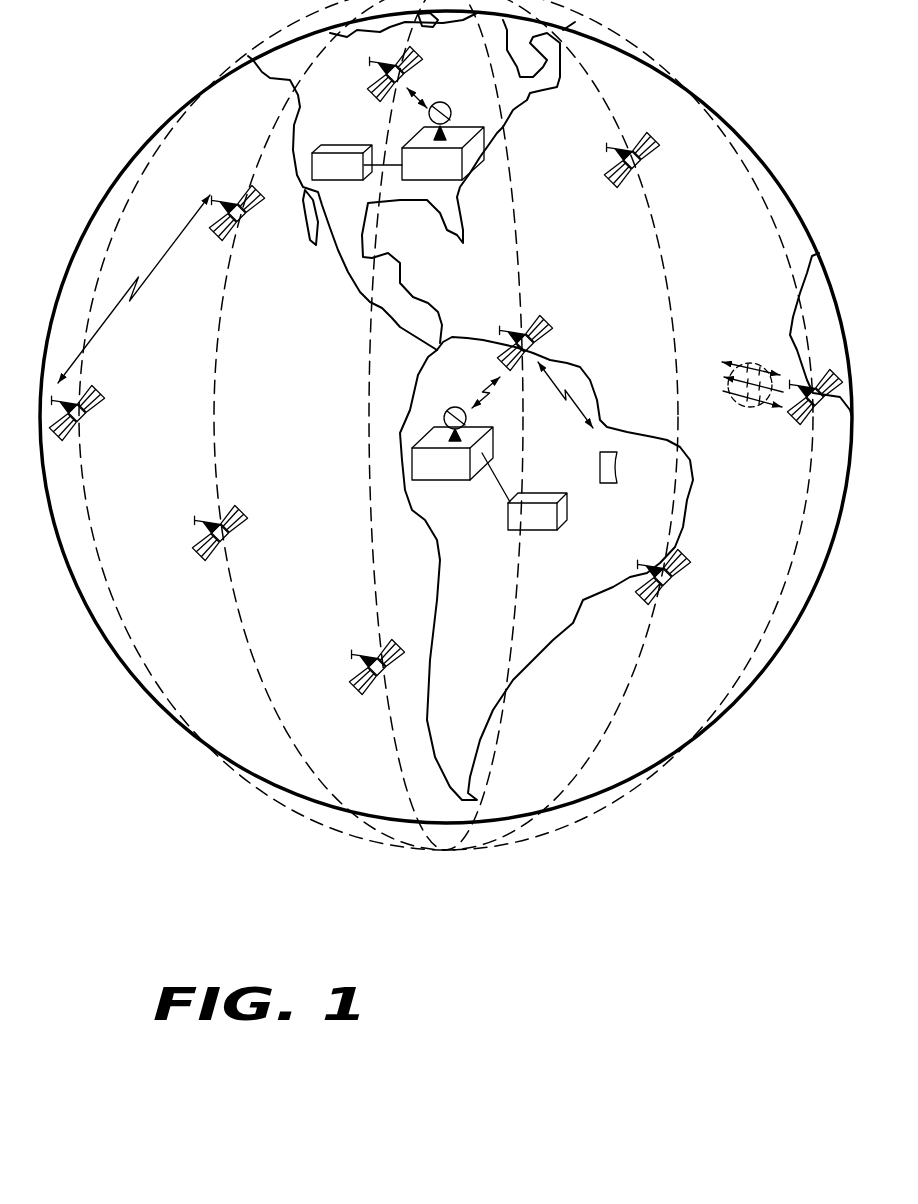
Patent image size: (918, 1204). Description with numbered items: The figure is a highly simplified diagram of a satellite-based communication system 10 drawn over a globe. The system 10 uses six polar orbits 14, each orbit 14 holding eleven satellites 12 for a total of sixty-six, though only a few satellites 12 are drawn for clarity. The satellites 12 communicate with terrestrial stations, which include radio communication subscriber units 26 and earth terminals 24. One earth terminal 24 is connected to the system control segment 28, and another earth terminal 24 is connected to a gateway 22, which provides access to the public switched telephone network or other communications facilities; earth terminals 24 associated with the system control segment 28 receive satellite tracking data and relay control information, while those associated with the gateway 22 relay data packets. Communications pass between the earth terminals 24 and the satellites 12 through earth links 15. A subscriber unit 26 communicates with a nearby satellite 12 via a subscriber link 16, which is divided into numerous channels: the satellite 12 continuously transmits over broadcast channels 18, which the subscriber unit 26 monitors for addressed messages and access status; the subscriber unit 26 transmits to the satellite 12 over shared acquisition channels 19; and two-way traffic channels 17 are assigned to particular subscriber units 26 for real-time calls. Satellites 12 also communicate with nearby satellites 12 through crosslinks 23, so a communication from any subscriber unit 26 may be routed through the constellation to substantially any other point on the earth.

The communication system 10 is at (448, 922).
The satellite 12 is at (375, 103).
The polar orbit 14 is at (270, 133).
The earth link 15 is at (478, 388).
The subscriber link 16 is at (762, 428).
The traffic channel 17 is at (745, 360).
The broadcast channel 18 is at (720, 372).
The acquisition channel 19 is at (740, 400).
The gateway 22 is at (545, 532).
The crosslink 23 is at (150, 275).
The earth terminal 24 is at (470, 123).
The subscriber unit 26 is at (612, 485).
The system control segment 28 is at (332, 182).